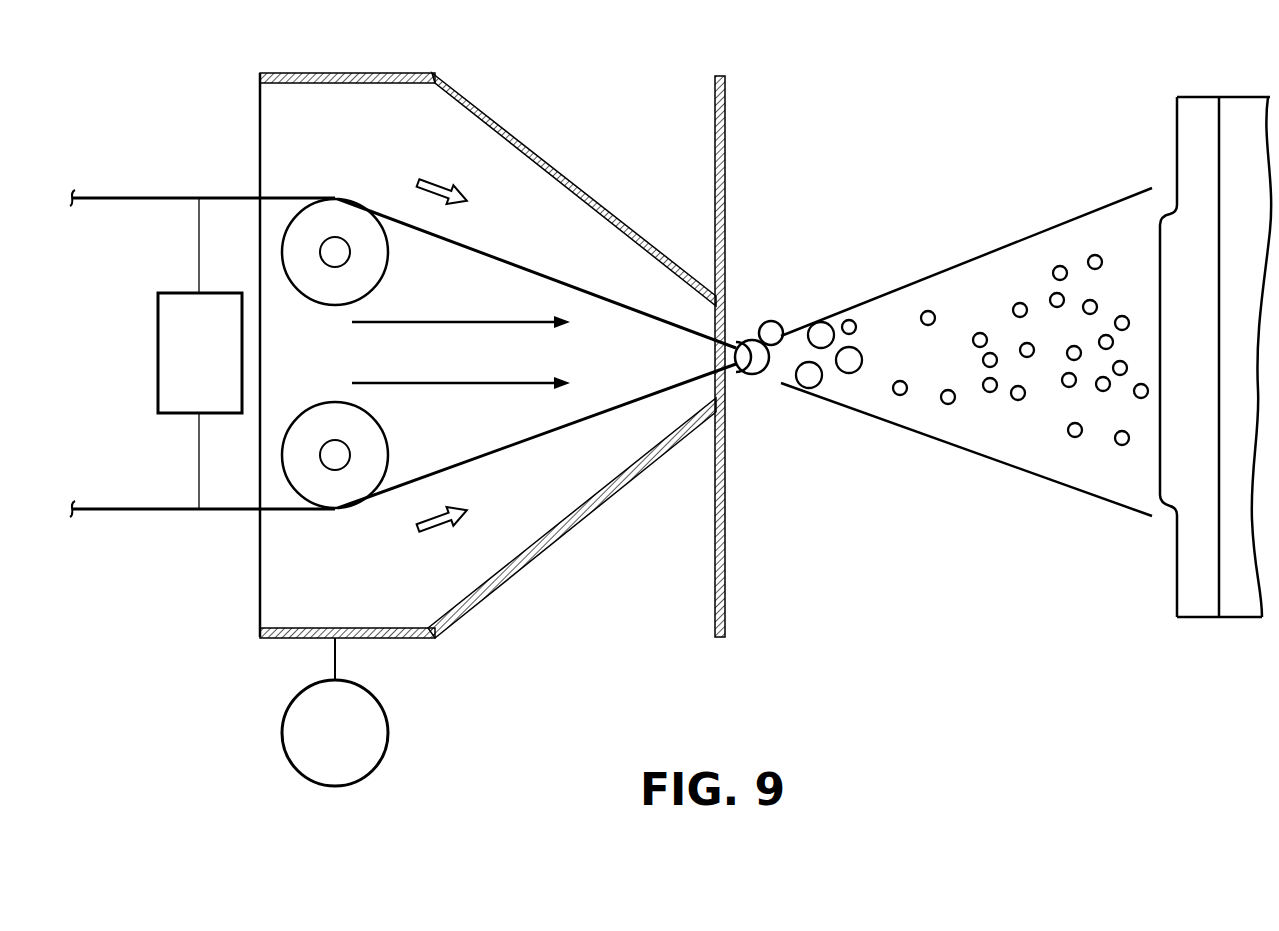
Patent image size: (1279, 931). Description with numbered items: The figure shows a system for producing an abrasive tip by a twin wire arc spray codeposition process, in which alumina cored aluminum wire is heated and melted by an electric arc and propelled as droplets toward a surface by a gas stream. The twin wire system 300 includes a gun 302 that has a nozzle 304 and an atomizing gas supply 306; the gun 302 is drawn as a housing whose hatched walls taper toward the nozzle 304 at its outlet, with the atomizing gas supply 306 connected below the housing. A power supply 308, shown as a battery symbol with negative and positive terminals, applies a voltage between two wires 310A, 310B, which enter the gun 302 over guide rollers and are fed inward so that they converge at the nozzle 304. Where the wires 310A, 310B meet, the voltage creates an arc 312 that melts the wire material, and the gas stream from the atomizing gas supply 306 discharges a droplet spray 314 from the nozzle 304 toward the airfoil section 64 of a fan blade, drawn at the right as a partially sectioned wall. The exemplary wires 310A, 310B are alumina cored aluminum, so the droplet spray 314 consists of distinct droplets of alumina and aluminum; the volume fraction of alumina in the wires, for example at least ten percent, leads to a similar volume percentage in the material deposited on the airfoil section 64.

The twin wire system 300 is at (492, 401).
The gun 302 is at (540, 602).
The nozzle 304 is at (558, 545).
The atomizing gas supply 306 is at (335, 712).
The power supply 308 is at (158, 380).
The wire 310A is at (151, 198).
The wire 310B is at (136, 511).
The arc 312 is at (758, 382).
The droplet spray 314 is at (968, 432).
The airfoil section 64 is at (1202, 112).